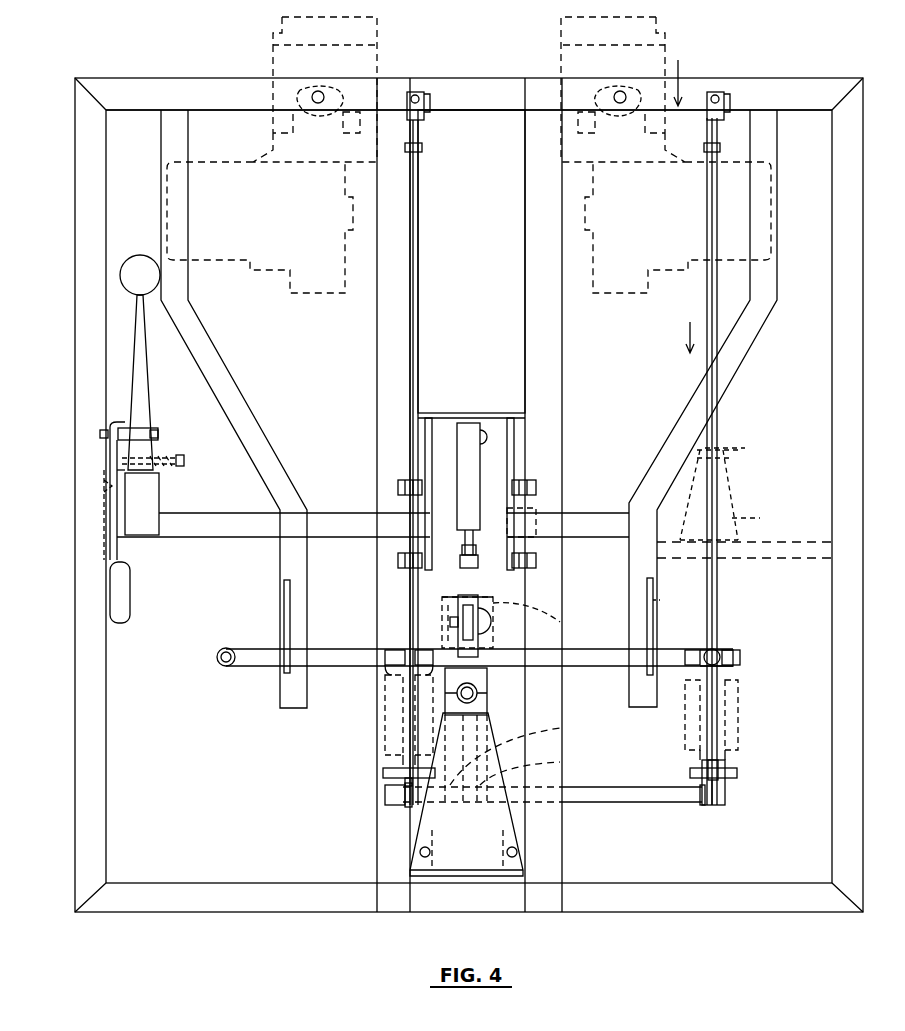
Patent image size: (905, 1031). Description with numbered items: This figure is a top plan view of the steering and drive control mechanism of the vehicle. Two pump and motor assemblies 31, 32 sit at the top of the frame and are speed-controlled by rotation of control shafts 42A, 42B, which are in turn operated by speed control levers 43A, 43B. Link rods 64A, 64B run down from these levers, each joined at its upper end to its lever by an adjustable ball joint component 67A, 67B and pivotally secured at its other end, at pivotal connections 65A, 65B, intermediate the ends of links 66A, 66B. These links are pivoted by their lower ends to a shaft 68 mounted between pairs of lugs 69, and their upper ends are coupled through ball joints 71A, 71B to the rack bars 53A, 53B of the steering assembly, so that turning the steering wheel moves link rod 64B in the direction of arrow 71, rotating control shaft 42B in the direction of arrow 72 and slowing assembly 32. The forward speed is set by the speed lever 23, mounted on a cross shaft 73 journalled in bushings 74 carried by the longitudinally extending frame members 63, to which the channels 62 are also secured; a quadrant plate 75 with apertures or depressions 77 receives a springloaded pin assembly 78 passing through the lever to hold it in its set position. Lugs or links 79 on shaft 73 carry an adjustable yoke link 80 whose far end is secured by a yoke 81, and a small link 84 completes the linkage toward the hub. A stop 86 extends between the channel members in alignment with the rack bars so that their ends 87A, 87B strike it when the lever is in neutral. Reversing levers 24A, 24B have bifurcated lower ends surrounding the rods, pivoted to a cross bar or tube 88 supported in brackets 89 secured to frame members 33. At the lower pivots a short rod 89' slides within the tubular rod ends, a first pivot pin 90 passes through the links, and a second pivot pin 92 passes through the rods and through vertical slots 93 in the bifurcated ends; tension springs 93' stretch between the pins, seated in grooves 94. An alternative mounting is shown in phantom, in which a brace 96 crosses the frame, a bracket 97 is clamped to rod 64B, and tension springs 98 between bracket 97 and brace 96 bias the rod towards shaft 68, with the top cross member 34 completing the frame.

The speed lever 23 is at (148, 389).
The reversing lever 24A is at (218, 661).
The reversing lever 24B is at (718, 652).
The pump and motor assembly 31 is at (270, 120).
The pump and motor assembly 32 is at (563, 72).
The frame member 33 is at (200, 340).
The top cross bar 34 is at (462, 100).
The control shaft 42A is at (320, 92).
The control shaft 42B is at (622, 92).
The speed control lever 43A is at (404, 116).
The speed control lever 43B is at (690, 106).
The rack bar 53A is at (442, 602).
The rack bar 53B is at (548, 619).
The channel 62 is at (424, 432).
The frame member 63 is at (378, 352).
The link rod 64A is at (471, 264).
The link rod 64B is at (718, 486).
The pivotal connection 65A is at (385, 787).
The pivotal connection 65B is at (700, 780).
The link 66A is at (408, 800).
The link 66B is at (700, 790).
The adjustable ball joint component 67A is at (418, 95).
The adjustable ball joint component 67B is at (720, 96).
The shaft 68 is at (470, 800).
The lugs 69 is at (448, 800).
The arrow 71 is at (676, 337).
The ball joint 71A is at (528, 750).
The ball joint 71B is at (542, 766).
The arrow 72 is at (692, 83).
The shaft 73 is at (190, 538).
The bushings 74 is at (418, 535).
The quadrant plate 75 is at (115, 432).
The apertures or depressions 77 is at (104, 500).
The springloaded pin assembly 78 is at (184, 460).
The lugs or links 79 is at (478, 448).
The adjustable yoke link 80 is at (478, 552).
The yoke 81 is at (475, 612).
The link 84 is at (455, 632).
The stop 86 is at (495, 600).
The end of rack bar 87A is at (402, 691).
The end of rack bar 87B is at (677, 603).
The cross bar or tube 88 is at (597, 668).
The bracket 89 is at (271, 626).
The short rod 89' is at (670, 623).
The first pivot pin 90 is at (410, 790).
The second pivot pin 92 is at (395, 652).
The vertical slots 93 is at (386, 715).
The tension springs 93' is at (735, 720).
The grooves 94 is at (385, 772).
The brace 96 is at (770, 560).
The bracket 97 is at (744, 445).
The tension springs 98 is at (769, 514).